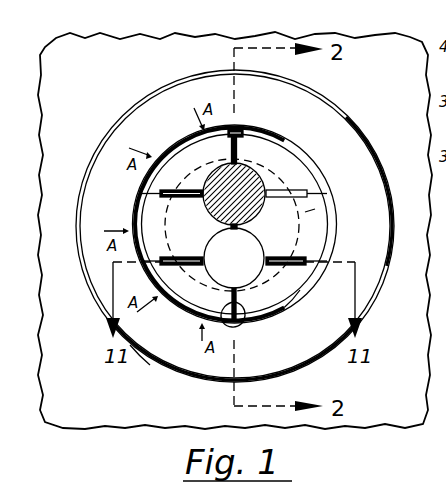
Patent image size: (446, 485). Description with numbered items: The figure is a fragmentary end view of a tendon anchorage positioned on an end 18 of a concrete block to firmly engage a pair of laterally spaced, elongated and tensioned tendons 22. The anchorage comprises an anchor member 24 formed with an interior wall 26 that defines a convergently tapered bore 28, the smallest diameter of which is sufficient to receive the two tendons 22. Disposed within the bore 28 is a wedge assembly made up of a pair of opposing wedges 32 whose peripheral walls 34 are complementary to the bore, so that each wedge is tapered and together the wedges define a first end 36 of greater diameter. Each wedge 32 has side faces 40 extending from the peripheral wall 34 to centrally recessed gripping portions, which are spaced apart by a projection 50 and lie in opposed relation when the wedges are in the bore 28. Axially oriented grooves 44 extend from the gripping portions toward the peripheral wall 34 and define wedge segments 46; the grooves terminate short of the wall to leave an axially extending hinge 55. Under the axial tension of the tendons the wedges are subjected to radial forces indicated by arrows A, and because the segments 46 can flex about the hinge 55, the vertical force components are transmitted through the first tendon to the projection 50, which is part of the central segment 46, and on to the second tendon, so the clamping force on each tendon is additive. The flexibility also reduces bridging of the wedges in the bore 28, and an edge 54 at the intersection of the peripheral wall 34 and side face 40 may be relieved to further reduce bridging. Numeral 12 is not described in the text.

The supporting surface 12 is at (331, 441).
The end 18 is at (88, 86).
The tendons 22 is at (267, 160).
The anchor member 24 is at (185, 360).
The interior wall 26 is at (340, 226).
The tapered bore 28 is at (184, 158).
The wedges 32 is at (136, 220).
The peripheral walls 34 is at (285, 314).
The first end 36 is at (158, 341).
The side faces 40 is at (236, 320).
The grooves 44 is at (267, 203).
The wedge segments 46 is at (286, 164).
The projection 50 is at (218, 228).
The edge 54 is at (238, 128).
The hinge 55 is at (140, 193).